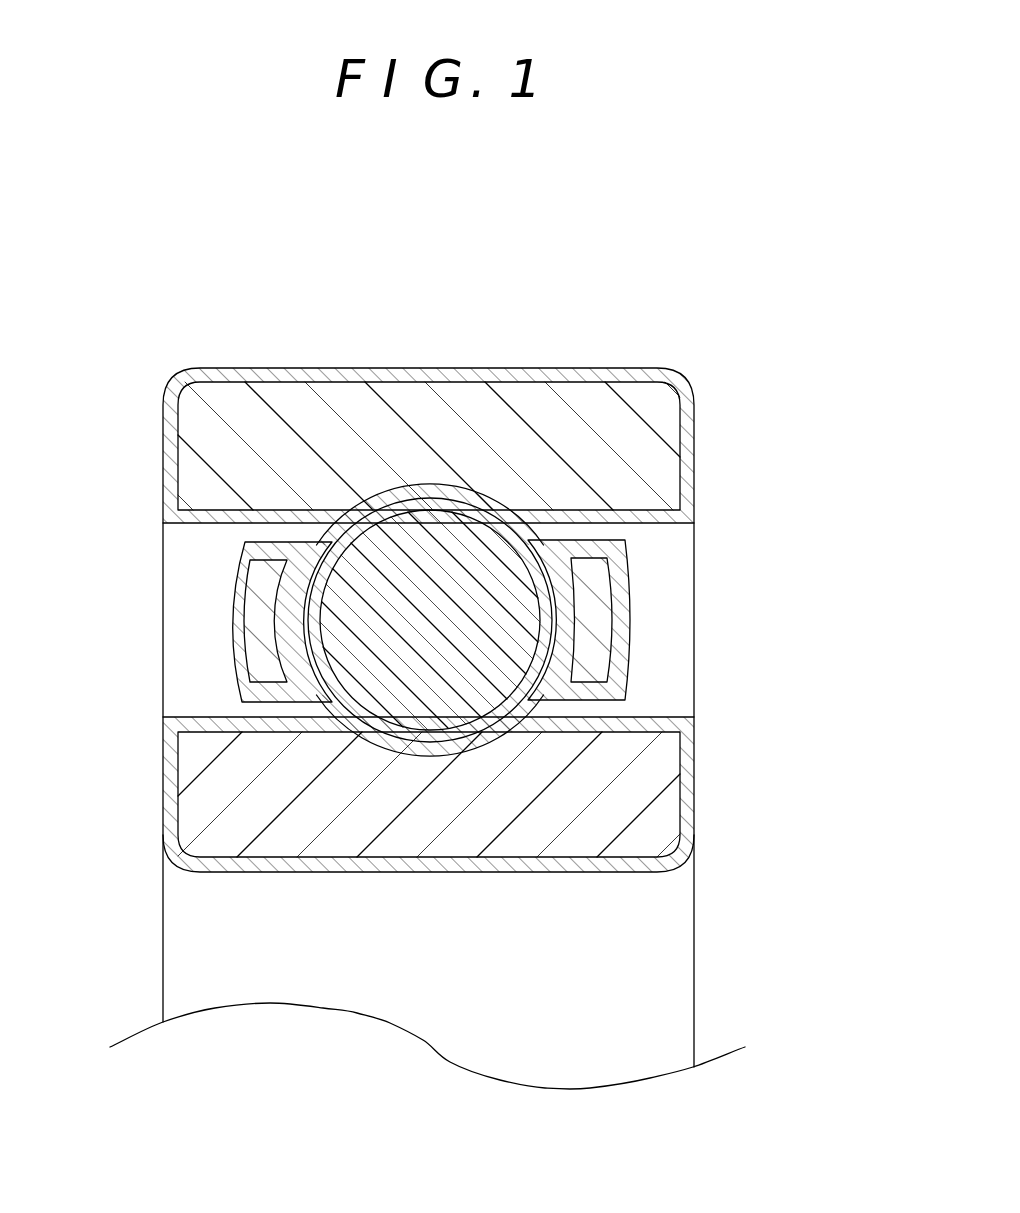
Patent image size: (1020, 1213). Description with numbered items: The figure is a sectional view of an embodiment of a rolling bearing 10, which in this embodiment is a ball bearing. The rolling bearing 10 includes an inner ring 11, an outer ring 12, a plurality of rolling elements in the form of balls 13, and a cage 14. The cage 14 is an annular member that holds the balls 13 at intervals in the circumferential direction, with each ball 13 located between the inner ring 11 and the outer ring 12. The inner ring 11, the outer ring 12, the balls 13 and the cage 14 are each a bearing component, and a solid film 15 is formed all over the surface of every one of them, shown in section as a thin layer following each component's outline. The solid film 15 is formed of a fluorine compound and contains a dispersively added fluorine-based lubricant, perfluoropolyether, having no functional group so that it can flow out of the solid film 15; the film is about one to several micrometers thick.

The rolling bearing 10 is at (620, 368).
The inner ring 11 is at (542, 820).
The outer ring 12 is at (542, 407).
The balls 13 is at (410, 540).
The cage 14 is at (253, 600).
The solid film 15 is at (522, 550).